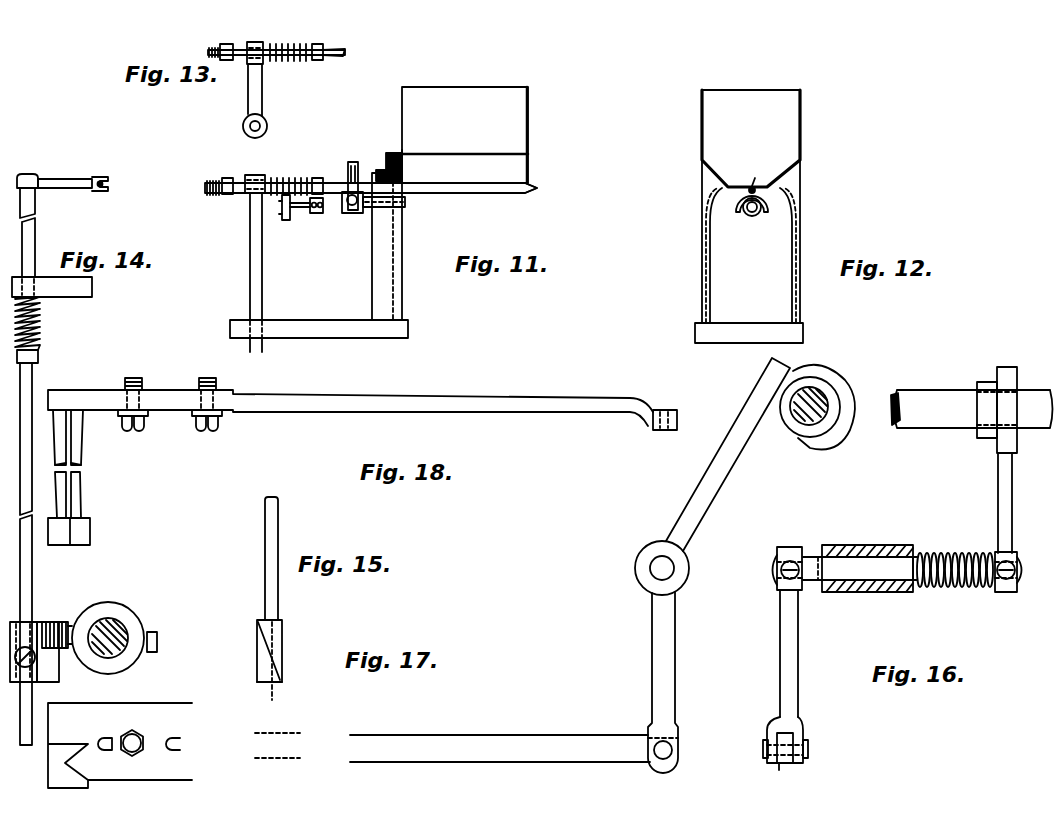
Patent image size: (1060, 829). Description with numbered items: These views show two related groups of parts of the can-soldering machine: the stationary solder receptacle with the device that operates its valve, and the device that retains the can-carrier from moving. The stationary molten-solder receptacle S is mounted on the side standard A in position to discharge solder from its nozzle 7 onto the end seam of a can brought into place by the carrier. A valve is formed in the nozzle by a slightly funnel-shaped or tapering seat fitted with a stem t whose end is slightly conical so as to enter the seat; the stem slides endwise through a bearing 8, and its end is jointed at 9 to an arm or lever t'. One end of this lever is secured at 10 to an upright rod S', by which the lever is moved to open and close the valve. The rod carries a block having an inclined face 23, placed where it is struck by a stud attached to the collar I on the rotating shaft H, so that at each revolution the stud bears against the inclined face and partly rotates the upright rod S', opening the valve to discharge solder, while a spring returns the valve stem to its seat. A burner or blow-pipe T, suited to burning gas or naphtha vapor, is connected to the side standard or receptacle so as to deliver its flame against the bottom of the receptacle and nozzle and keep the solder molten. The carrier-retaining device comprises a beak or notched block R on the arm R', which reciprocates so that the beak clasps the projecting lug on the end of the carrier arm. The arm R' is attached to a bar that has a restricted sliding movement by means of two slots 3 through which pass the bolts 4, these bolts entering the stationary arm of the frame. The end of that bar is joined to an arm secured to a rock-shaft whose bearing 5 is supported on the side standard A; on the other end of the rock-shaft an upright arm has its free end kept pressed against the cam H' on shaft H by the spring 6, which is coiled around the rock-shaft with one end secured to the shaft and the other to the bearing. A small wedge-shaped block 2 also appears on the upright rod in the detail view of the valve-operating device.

In FIG. 13, the joint 9 is at (257, 42).
In FIG. 14, the joint 9 is at (98, 192).
In FIG. 13, the stem t is at (276, 46).
In FIG. 14, the stem t is at (175, 733).
In FIG. 11, the stem t is at (342, 186).
In FIG. 13, the arm or lever t' is at (246, 90).
In FIG. 14, the arm or lever t' is at (65, 172).
In FIG. 13, the securing point 10 is at (243, 127).
In FIG. 14, the securing point 10 is at (29, 175).
In FIG. 11, the securing point 10 is at (254, 175).
In FIG. 14, the upright rod S' is at (52, 466).
In FIG. 11, the upright rod S' is at (244, 272).
In FIG. 15, the upright rod S' is at (256, 558).
In FIG. 14, the inclined face 23 is at (48, 666).
In FIG. 14, the collar I is at (117, 662).
In FIG. 14, the shaft H is at (108, 620).
In FIG. 17, the shaft H is at (807, 431).
In FIG. 16, the shaft H is at (972, 409).
In FIG. 14, the beak or notched block R is at (109, 745).
In FIG. 18, the beak or notched block R is at (78, 508).
In FIG. 14, the slots 3 is at (108, 740).
In FIG. 14, the bolts 4 is at (129, 752).
In FIG. 18, the bolts 4 is at (136, 428).
In FIG. 11, the stationary molten-solder receptacle S is at (465, 135).
In FIG. 12, the stationary molten-solder receptacle S is at (751, 138).
In FIG. 11, the standard A is at (362, 322).
In FIG. 12, the standard A is at (698, 326).
In FIG. 11, the bearing 8 is at (455, 193).
In FIG. 12, the bearing 8 is at (756, 179).
In FIG. 11, the nozzle 7 is at (537, 188).
In FIG. 11, the burner or blow-pipe T is at (340, 210).
In FIG. 12, the burner or blow-pipe T is at (755, 217).
In FIG. 18, the arm R' is at (79, 437).
In FIG. 15, the base 2 is at (266, 684).
In FIG. 17, the cam H' is at (823, 402).
In FIG. 16, the cam H' is at (1010, 399).
In FIG. 16, the bearing 5 is at (890, 546).
In FIG. 16, the spring 6 is at (946, 588).